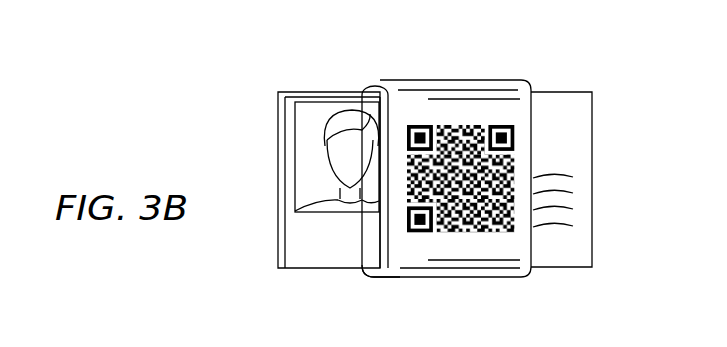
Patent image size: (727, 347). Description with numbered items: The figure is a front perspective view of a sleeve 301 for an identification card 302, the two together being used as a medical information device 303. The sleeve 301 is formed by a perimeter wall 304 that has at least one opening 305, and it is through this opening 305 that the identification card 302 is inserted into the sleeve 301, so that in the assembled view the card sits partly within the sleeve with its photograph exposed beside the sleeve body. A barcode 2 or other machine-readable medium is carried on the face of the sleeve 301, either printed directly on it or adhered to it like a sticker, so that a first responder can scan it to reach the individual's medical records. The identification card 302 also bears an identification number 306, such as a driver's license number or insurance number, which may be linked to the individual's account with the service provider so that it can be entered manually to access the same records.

The sleeve 301 is at (460, 80).
The identification card 302 is at (562, 92).
The medical information device 303 is at (240, 119).
The perimeter wall 304 is at (415, 277).
The opening 305 is at (380, 112).
The identification number 306 is at (570, 158).
The barcode 2 is at (478, 236).